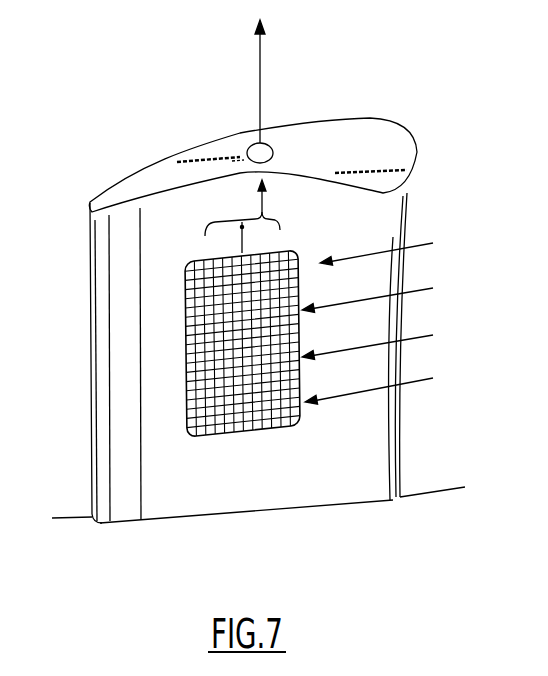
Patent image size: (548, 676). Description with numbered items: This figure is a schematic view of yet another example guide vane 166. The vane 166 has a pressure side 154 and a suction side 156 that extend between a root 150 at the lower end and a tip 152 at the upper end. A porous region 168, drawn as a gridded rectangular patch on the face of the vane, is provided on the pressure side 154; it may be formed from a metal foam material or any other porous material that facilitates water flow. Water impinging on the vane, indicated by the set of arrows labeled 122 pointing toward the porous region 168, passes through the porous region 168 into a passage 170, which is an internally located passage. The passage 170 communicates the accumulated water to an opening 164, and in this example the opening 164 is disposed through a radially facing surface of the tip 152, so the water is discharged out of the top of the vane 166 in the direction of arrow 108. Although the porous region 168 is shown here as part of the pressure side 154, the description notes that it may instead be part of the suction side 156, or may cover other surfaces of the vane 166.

The radial direction arrow 108 is at (262, 72).
The cooling air flow 122 is at (440, 236).
The root 150 is at (134, 516).
The tip 152 is at (141, 168).
The pressure side 154 is at (122, 416).
The suction side 156 is at (357, 118).
The opening 164 is at (290, 151).
The vane 166 is at (172, 118).
The porous region 168 is at (240, 448).
The passage 170 is at (305, 221).